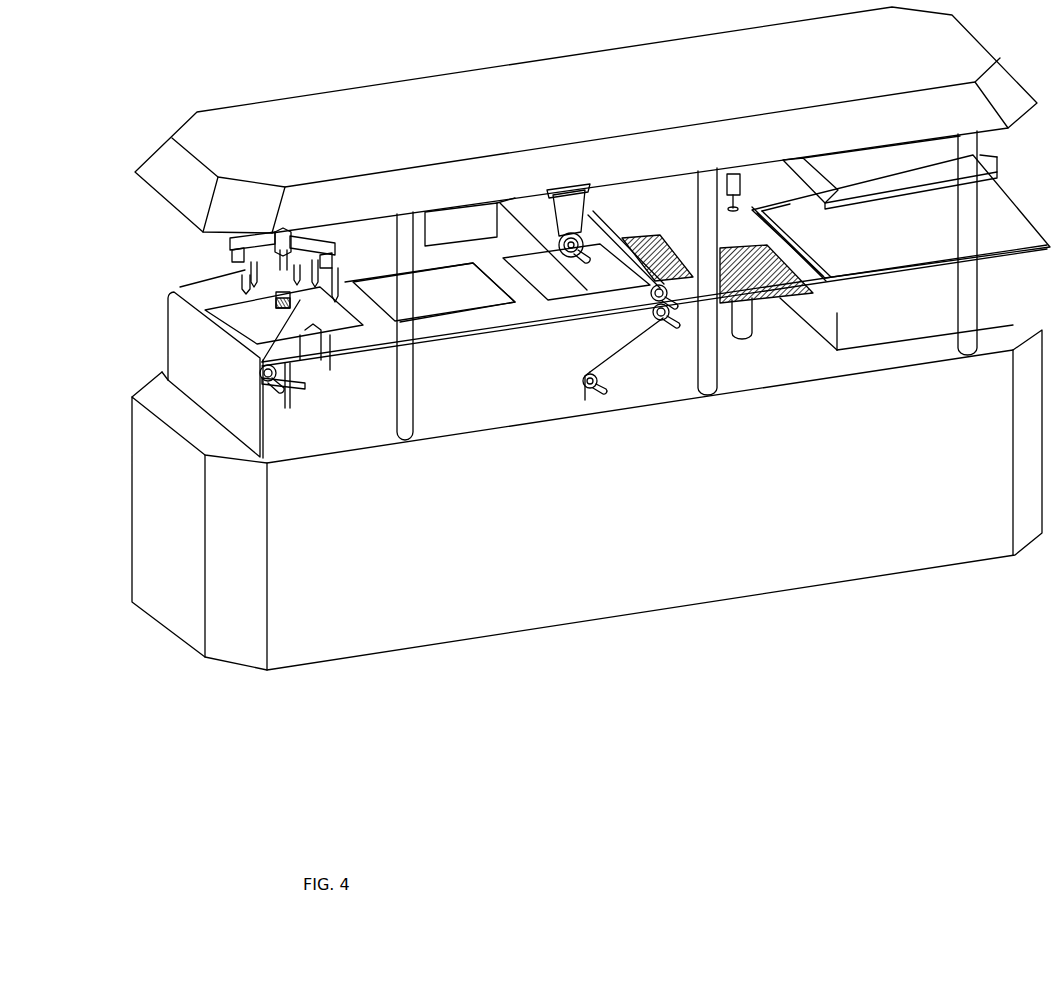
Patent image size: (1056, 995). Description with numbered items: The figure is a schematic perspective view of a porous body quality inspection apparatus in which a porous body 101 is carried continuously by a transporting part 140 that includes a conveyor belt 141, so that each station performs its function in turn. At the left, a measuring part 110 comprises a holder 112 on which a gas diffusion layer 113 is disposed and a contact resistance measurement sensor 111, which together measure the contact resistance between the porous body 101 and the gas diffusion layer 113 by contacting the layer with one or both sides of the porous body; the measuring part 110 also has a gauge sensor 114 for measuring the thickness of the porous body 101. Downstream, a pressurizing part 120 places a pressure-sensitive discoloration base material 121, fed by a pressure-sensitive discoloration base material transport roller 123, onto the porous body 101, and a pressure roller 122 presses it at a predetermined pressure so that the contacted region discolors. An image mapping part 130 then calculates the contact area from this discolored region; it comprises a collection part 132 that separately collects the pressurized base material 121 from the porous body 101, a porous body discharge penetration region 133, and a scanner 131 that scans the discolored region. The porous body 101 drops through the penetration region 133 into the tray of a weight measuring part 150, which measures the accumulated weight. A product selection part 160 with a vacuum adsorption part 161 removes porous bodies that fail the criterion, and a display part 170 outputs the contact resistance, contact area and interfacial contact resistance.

The porous body 101 is at (340, 332).
The measuring part 110 is at (315, 408).
The contact resistance measurement sensor 111 is at (120, 244).
The holder 112 is at (225, 263).
The gas diffusion layer 113 is at (243, 281).
The gauge sensor 114 is at (332, 286).
The pressurizing part 120 is at (623, 204).
The pressure-sensitive discoloration base material 121 is at (616, 286).
The pressure roller 122 is at (676, 285).
The pressure-sensitive discoloration base material transport roller 123 is at (566, 258).
The image mapping part 130 is at (876, 217).
The scanner 131 is at (910, 267).
The collection part 132 is at (680, 220).
The porous body discharge penetration region 133 is at (766, 219).
The transporting part 140 is at (448, 400).
The conveyor belt 141 is at (465, 348).
The weight measuring part 150 is at (781, 325).
The product selection part 160 is at (733, 172).
The vacuum adsorption part 161 is at (738, 205).
The display part 170 is at (470, 210).